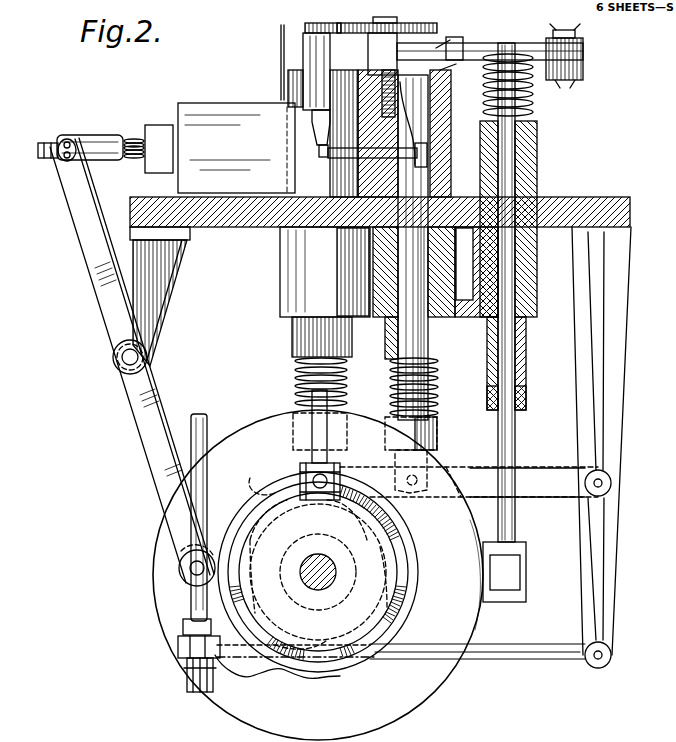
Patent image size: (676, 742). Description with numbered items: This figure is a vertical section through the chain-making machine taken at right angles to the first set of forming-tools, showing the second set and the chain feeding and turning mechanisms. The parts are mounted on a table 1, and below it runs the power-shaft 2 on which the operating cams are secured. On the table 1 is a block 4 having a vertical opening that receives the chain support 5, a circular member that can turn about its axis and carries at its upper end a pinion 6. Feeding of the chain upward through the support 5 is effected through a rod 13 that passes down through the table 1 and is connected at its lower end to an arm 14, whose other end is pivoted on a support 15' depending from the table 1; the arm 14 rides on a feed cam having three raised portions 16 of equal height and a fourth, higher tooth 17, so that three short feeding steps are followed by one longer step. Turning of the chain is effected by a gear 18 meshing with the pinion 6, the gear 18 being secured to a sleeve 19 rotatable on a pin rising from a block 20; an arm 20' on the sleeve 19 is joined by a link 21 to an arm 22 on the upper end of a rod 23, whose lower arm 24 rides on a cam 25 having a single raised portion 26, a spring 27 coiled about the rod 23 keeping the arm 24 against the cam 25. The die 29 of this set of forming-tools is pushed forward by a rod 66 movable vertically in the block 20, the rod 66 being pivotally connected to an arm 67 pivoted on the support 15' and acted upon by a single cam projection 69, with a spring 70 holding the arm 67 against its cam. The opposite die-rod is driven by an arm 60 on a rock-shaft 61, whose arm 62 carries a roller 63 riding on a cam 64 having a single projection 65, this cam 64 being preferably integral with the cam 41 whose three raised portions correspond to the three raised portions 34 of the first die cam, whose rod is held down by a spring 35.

The table 1 is at (630, 205).
The power-shaft 2 is at (336, 572).
The block 4 is at (302, 57).
The support 5 is at (321, 133).
The pinion 6 is at (290, 50).
The rod 13 is at (207, 425).
The arm 14 is at (500, 660).
The support 15' is at (619, 441).
The raised portions 16 is at (318, 574).
The tooth 17 is at (390, 592).
The gear 18 is at (387, 16).
The sleeve 19 is at (368, 53).
The block 20 is at (496, 252).
The arm 20' is at (449, 36).
The link 21 is at (472, 78).
The arm 22 is at (575, 52).
The rod 23 is at (515, 440).
The arm 24 is at (490, 570).
The cam 25 is at (464, 575).
The raised portion 26 is at (160, 647).
The spring 27 is at (522, 98).
The die 29 is at (340, 162).
The raised portions 34 is at (385, 517).
The spring 35 is at (348, 400).
The cam 41 is at (340, 472).
The arm 60 is at (100, 279).
The rock-shaft 61 is at (128, 357).
The arm 62 is at (152, 441).
The roller 63 is at (178, 564).
The cam 64 is at (333, 672).
The projection 65 is at (245, 667).
The rod 66 is at (412, 336).
The arm 67 is at (540, 498).
The projection 69 is at (256, 477).
The spring 70 is at (438, 395).